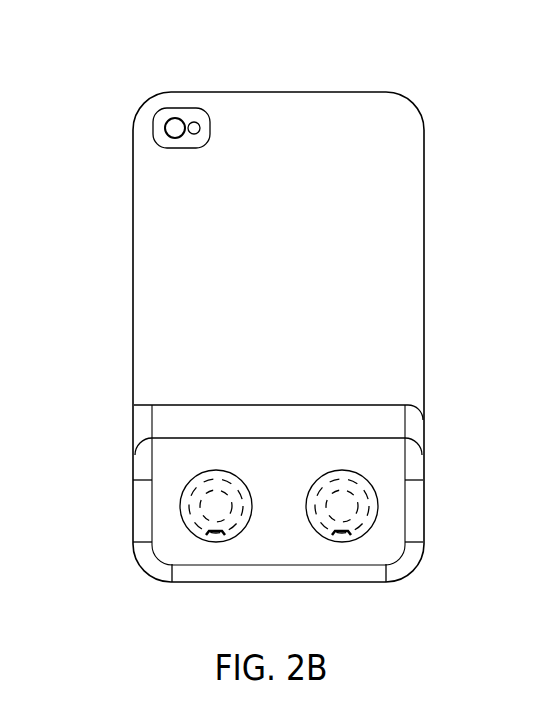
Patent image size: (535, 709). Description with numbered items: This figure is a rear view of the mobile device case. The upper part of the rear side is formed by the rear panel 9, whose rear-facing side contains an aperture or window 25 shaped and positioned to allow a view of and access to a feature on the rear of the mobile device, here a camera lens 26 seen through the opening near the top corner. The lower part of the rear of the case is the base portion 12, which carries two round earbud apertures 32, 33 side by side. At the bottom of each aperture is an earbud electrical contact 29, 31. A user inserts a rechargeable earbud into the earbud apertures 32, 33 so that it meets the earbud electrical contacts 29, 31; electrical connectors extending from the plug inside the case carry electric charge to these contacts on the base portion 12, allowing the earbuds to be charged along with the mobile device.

The rear panel 9 is at (162, 322).
The base portion 12 is at (143, 422).
The aperture or window 25 is at (188, 110).
The camera lens 26 is at (172, 126).
The earbud electrical contact 29 is at (210, 533).
The earbud electrical contact 31 is at (350, 535).
The earbud aperture 32 is at (185, 506).
The earbud aperture 33 is at (370, 507).